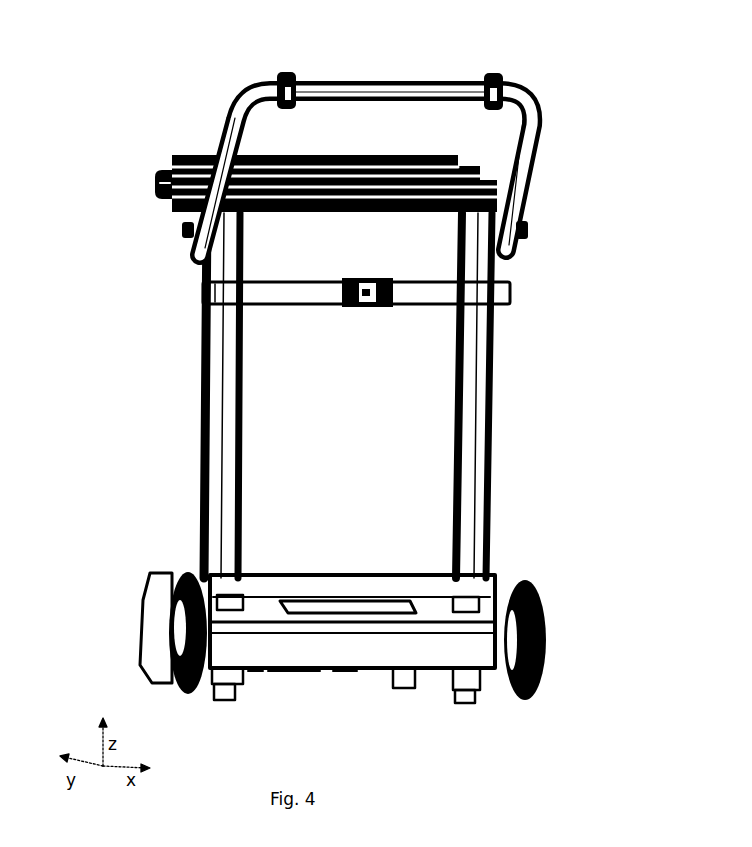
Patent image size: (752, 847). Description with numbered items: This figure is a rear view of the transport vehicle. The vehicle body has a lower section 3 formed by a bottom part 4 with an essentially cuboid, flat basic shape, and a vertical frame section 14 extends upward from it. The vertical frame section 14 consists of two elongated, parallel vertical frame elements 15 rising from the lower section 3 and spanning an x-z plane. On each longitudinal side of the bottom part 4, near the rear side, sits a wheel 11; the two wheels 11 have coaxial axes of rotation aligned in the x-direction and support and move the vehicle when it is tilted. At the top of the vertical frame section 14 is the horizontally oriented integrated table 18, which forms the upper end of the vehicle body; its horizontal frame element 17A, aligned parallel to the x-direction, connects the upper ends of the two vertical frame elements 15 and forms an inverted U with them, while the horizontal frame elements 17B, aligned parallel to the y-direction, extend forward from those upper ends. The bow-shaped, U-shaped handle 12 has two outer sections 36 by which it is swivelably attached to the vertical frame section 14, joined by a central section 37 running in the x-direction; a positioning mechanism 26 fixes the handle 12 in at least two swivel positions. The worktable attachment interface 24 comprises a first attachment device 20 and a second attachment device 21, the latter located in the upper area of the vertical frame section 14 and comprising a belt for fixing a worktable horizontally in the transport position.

The lower section 3 is at (277, 638).
The bottom part 4 is at (148, 650).
The wheel 11 is at (548, 630).
The handle 12 is at (536, 107).
The vertical frame section 14 is at (343, 395).
The vertical frame element 15 is at (212, 467).
The horizontal frame element 17A is at (333, 213).
The horizontal frame element 17B is at (178, 207).
The integrated table 18 is at (142, 184).
The first attachment device 20 is at (348, 612).
The second attachment device 21 is at (502, 293).
The worktable attachment interface 24 is at (417, 437).
The positioning mechanism 26 is at (530, 230).
The outer section 36 is at (206, 148).
The central section 37 is at (355, 95).